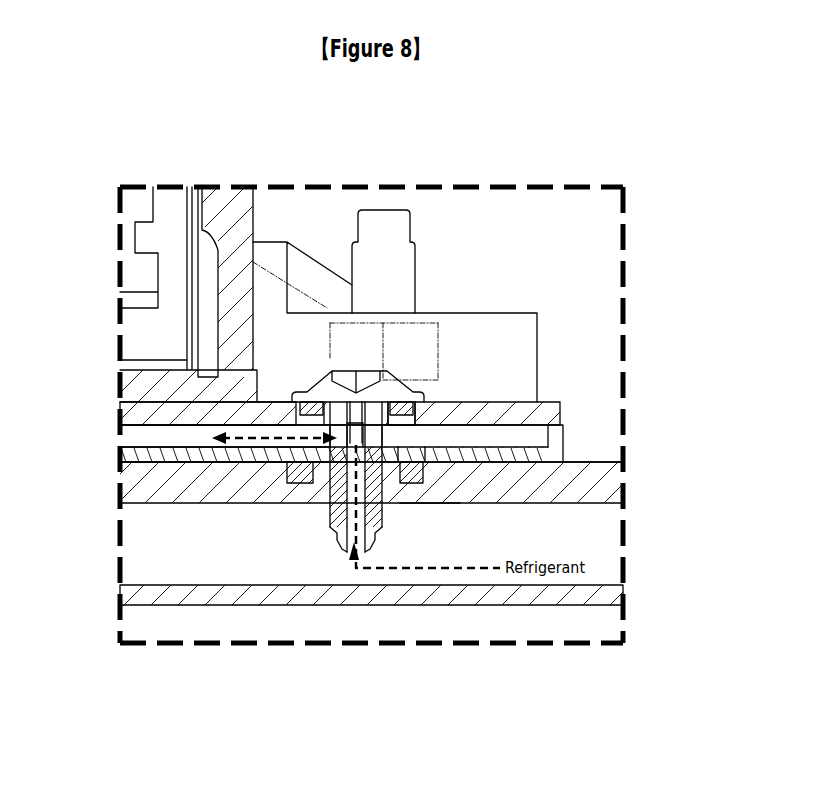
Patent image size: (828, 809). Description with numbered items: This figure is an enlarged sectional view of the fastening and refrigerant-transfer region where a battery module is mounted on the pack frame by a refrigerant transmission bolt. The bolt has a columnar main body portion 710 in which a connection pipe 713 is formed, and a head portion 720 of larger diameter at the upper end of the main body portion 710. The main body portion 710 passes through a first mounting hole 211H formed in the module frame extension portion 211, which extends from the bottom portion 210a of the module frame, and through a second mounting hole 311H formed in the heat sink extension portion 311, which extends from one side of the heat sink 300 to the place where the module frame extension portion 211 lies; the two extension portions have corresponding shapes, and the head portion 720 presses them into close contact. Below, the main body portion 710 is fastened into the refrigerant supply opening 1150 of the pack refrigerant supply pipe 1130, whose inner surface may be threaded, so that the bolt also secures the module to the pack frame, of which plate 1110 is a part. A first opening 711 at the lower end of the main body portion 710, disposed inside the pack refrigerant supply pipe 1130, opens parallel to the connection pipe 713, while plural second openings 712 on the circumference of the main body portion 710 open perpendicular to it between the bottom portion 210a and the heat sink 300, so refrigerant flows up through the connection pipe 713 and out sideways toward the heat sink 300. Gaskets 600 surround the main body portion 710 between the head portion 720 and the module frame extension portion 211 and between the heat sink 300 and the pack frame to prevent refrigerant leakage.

The gasket 600 is at (306, 402).
The head portion 720 is at (373, 393).
The second opening 712 is at (338, 436).
The connection pipe 713 is at (333, 528).
The first opening 711 is at (353, 546).
The main body portion 710 is at (384, 520).
The bottom portion 210a is at (130, 414).
The module frame extension portion 211 is at (548, 415).
The first mounting hole 211H is at (420, 412).
The heat sink extension portion 311 is at (563, 455).
The second mounting hole 311H is at (430, 469).
The heat sink 300 is at (130, 455).
The housing upper plate 1110 is at (130, 483).
The pack refrigerant supply pipe 1130 is at (140, 543).
The refrigerant supply opening 1150 is at (428, 504).